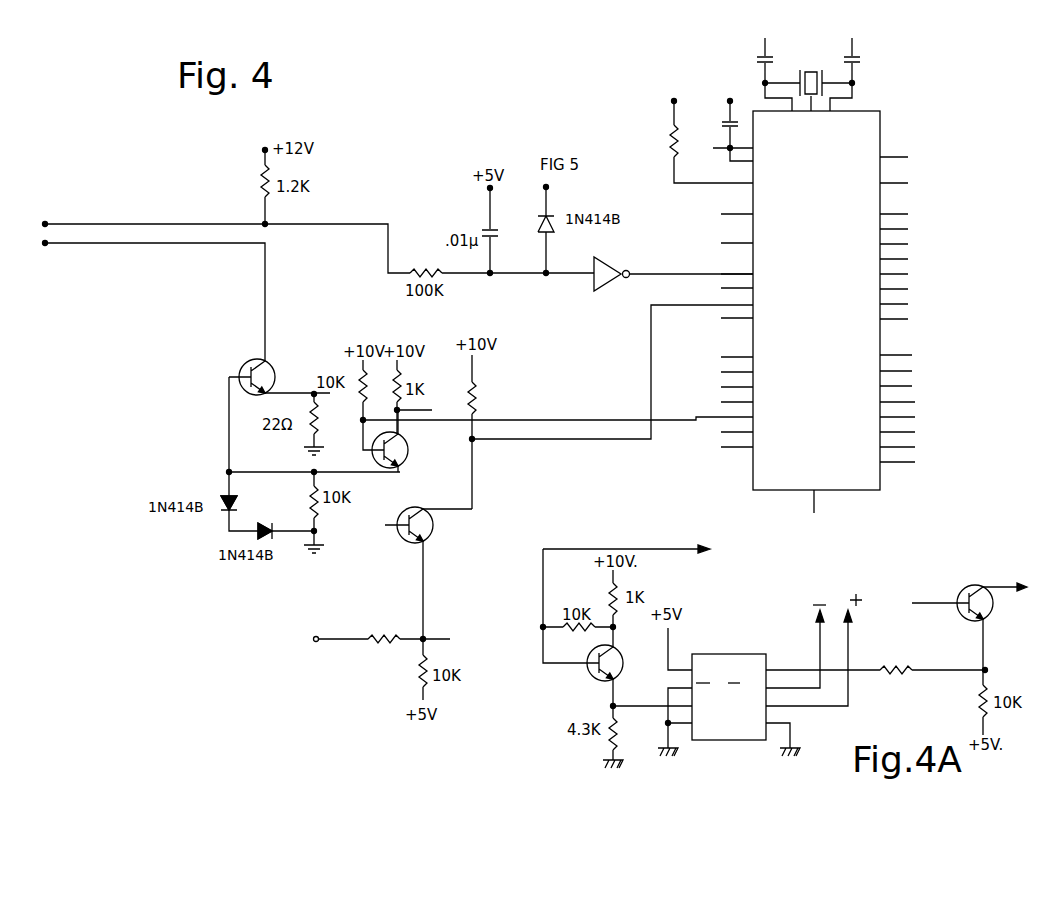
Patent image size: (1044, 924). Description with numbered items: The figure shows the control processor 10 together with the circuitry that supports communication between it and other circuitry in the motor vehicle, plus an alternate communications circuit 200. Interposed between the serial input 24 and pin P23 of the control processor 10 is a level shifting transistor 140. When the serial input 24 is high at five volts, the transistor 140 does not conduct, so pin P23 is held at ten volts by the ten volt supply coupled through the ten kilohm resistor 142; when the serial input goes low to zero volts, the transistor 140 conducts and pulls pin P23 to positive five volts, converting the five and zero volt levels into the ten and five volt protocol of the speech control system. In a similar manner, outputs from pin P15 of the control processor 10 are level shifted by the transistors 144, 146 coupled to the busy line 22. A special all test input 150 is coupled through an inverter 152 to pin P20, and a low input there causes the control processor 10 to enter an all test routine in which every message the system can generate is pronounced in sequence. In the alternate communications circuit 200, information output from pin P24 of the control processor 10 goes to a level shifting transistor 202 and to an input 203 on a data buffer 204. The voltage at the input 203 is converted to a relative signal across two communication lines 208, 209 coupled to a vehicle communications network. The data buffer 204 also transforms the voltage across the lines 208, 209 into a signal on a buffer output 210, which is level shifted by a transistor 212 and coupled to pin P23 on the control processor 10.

In FIG. 4, the all test input 150 is at (140, 224).
In FIG. 4, the busy line 22 is at (117, 245).
In FIG. 4, the transistor 146 is at (263, 362).
In FIG. 4, the transistor 144 is at (406, 458).
In FIG. 4, the 10 kilohm resistor 142 is at (478, 381).
In FIG. 4, the level shifting transistor 140 is at (430, 541).
In FIG. 4, the inverter 152 is at (604, 268).
In FIG. 4, the control processor 10 is at (865, 258).
In FIG. 4, the serial input 24 is at (355, 641).
In FIG. 4A, the alternate communications circuit 200 is at (775, 600).
In FIG. 4A, the level shifting transistor 202 is at (592, 677).
In FIG. 4A, the input 203 is at (645, 706).
In FIG. 4A, the data buffer 204 is at (727, 660).
In FIG. 4A, the buffer output 210 is at (793, 669).
In FIG. 4A, the communication line 208 is at (824, 681).
In FIG. 4A, the communication line 209 is at (814, 706).
In FIG. 4A, the transistor 212 is at (968, 586).